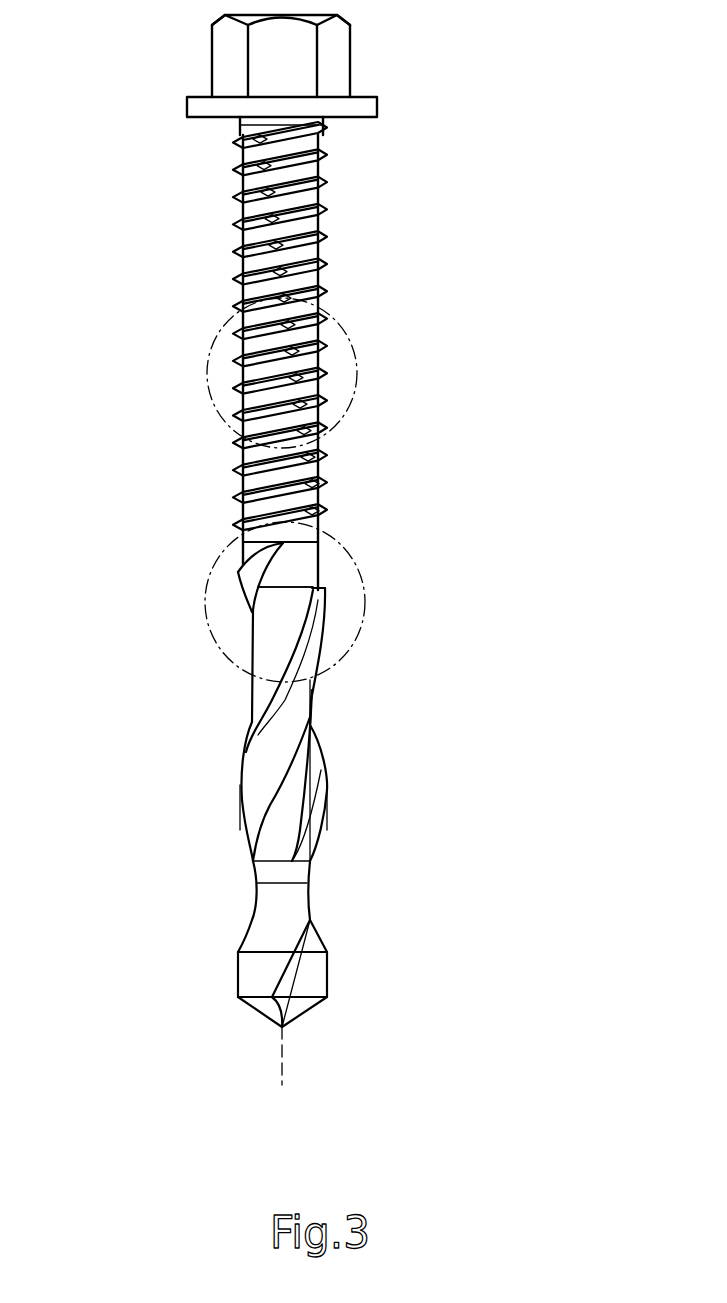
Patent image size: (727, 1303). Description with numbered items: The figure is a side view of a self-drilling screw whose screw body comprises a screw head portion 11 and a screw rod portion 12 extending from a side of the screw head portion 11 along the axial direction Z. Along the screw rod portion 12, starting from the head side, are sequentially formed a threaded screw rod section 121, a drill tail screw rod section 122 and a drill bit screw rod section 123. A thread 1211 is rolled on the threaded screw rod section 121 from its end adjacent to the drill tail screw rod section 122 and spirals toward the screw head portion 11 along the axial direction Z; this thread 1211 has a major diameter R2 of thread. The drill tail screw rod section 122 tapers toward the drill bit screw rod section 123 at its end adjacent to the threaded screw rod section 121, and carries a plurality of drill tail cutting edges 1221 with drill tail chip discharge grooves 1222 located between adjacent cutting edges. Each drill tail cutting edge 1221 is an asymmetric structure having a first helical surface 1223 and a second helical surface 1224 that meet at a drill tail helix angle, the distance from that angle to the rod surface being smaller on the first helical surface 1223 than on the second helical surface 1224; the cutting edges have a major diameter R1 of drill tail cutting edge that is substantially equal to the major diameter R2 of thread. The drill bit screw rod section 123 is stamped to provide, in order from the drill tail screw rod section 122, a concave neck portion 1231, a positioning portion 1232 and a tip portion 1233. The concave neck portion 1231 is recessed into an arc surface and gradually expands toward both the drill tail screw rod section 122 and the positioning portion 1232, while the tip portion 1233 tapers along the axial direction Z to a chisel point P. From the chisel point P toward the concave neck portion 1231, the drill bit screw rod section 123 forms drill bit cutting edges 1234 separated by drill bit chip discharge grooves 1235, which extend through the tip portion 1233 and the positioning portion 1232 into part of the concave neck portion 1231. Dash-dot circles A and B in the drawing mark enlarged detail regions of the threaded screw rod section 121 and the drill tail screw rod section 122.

The screw head portion 11 is at (352, 15).
The screw rod portion 12 is at (588, 1027).
The threaded screw rod section 121 is at (297, 329).
The thread 1211 is at (241, 284).
The drill tail screw rod section 122 is at (288, 700).
The drill tail cutting edge 1221 is at (240, 575).
The drill tail chip discharge groove 1222 is at (272, 655).
The first helical surface 1223 is at (292, 686).
The second helical surface 1224 is at (242, 566).
The drill bit screw rod section 123 is at (350, 995).
The concave neck portion 1231 is at (426, 861).
The positioning portion 1232 is at (426, 952).
The tip portion 1233 is at (426, 997).
The drill bit cutting edge 1234 is at (285, 988).
The drill bit chip discharge groove 1235 is at (305, 975).
The major diameter of drill tail cutting edge R1 is at (195, 817).
The major diameter of thread R2 is at (197, 373).
The detail circle A is at (276, 373).
The detail circle B is at (282, 593).
The chisel point P is at (282, 1027).
The axial direction Z is at (283, 1078).